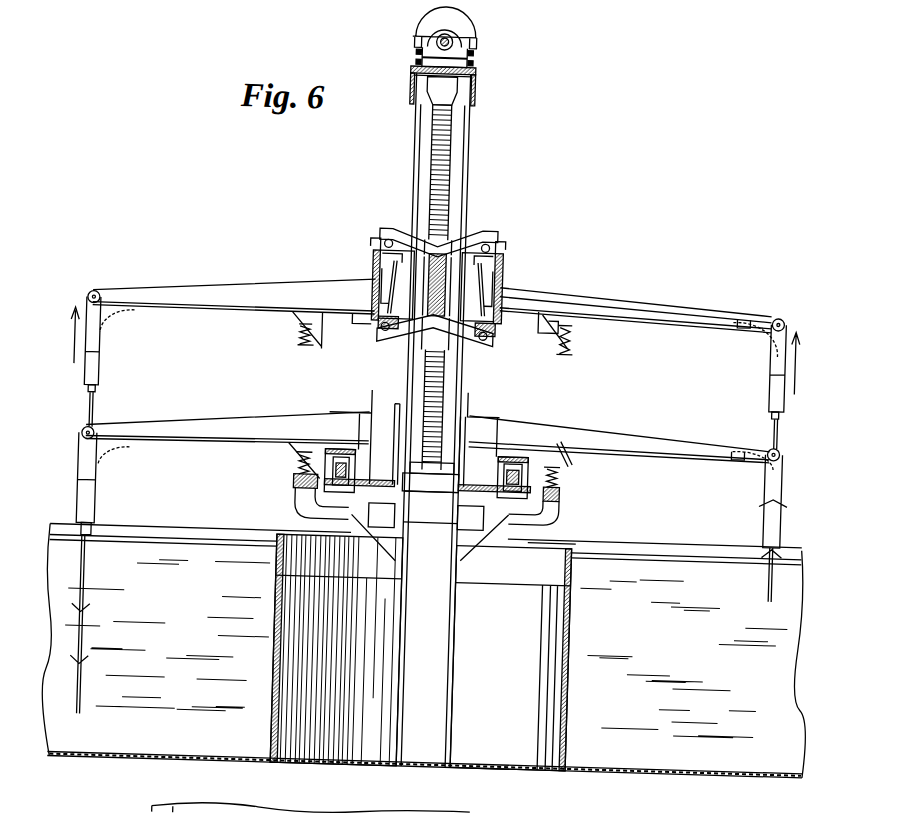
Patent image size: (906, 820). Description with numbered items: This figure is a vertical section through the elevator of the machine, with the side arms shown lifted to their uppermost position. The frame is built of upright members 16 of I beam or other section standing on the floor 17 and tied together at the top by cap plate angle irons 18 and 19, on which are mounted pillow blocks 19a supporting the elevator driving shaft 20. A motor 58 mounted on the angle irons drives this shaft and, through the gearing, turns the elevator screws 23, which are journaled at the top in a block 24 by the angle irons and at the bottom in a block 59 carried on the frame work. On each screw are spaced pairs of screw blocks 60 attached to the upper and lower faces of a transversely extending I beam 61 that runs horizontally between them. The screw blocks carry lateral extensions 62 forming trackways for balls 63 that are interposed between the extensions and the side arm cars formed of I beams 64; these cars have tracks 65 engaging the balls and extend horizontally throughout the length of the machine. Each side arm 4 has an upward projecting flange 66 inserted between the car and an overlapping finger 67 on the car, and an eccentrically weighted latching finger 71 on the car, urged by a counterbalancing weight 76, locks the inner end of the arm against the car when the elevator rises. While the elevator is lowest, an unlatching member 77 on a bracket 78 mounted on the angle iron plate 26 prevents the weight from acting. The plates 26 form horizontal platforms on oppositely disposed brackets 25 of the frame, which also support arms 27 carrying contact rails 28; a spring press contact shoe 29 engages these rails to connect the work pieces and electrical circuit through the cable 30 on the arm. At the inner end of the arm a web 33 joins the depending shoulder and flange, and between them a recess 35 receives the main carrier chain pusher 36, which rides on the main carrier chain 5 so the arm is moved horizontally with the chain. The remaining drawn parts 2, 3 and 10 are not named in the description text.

The connecting rod 2 is at (95, 410).
The float 3 is at (100, 358).
The arm 4 is at (213, 297).
The main carrier chain 5 is at (360, 470).
The screw shaft 10 is at (420, 198).
The upright members 16 is at (416, 153).
The floor 17 is at (523, 773).
The angle iron 18 is at (471, 84).
The angle iron 19 is at (413, 85).
The pillow blocks 19a is at (452, 60).
The elevator driving shaft 20 is at (450, 37).
The elevator screws 23 is at (445, 138).
The block 24 is at (440, 91).
The brackets 25 is at (478, 548).
The angle iron plates 26 is at (375, 493).
The arms 27 is at (312, 508).
The contact rails 28 is at (296, 484).
The spring press contact shoe 29 is at (297, 346).
The cable 30 is at (678, 318).
The web 33 is at (320, 352).
The recess 35 is at (363, 328).
The main carrier chain pusher 36 is at (337, 452).
The motor 58 is at (430, 22).
The block 59 is at (432, 503).
The screw blocks 60 is at (437, 243).
The I beam 61 is at (415, 344).
The lateral extensions 62 is at (477, 234).
The balls 63 is at (488, 246).
The I beams 64 is at (500, 282).
The tracks 65 is at (504, 256).
The upward projecting flange 66 is at (380, 269).
The overlapping finger 67 is at (377, 252).
The latching finger 71 is at (500, 298).
The counterbalancing weight 76 is at (437, 288).
The unlatching member 77 is at (374, 408).
The bracket 78 is at (395, 433).